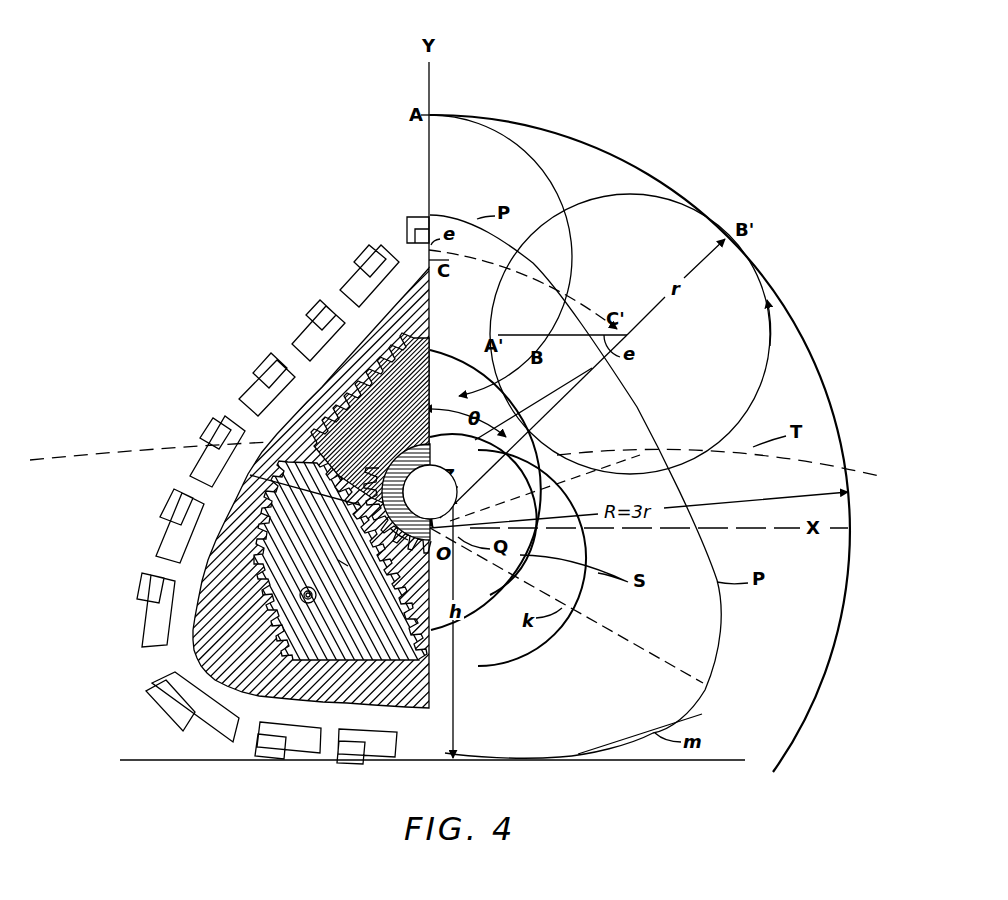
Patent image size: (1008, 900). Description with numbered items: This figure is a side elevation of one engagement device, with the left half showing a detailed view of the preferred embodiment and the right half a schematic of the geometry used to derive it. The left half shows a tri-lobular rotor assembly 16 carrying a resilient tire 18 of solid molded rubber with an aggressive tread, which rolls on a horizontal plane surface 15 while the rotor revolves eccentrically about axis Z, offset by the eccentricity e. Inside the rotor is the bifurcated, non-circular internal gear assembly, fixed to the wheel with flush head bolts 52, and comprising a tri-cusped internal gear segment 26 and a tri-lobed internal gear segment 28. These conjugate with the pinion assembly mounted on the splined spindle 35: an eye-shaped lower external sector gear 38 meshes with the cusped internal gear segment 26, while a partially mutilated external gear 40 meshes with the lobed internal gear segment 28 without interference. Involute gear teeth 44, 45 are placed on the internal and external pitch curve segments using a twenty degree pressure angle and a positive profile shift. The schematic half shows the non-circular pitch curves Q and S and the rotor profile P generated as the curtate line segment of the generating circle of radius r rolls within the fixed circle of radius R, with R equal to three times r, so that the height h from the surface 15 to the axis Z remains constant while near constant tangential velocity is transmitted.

The horizontal surface 15 is at (212, 760).
The lobed rotor assembly 16 is at (296, 240).
The resilient tire 18 is at (240, 423).
The internal gear segment 26 is at (304, 549).
The internal gear segment 28 is at (245, 653).
The spindle 35 is at (383, 487).
The lower external sector gear 38 is at (387, 517).
The external gear 40 is at (409, 407).
The gear teeth 44 is at (345, 564).
The gear teeth 45 is at (396, 535).
The flush head bolt 52 is at (308, 595).